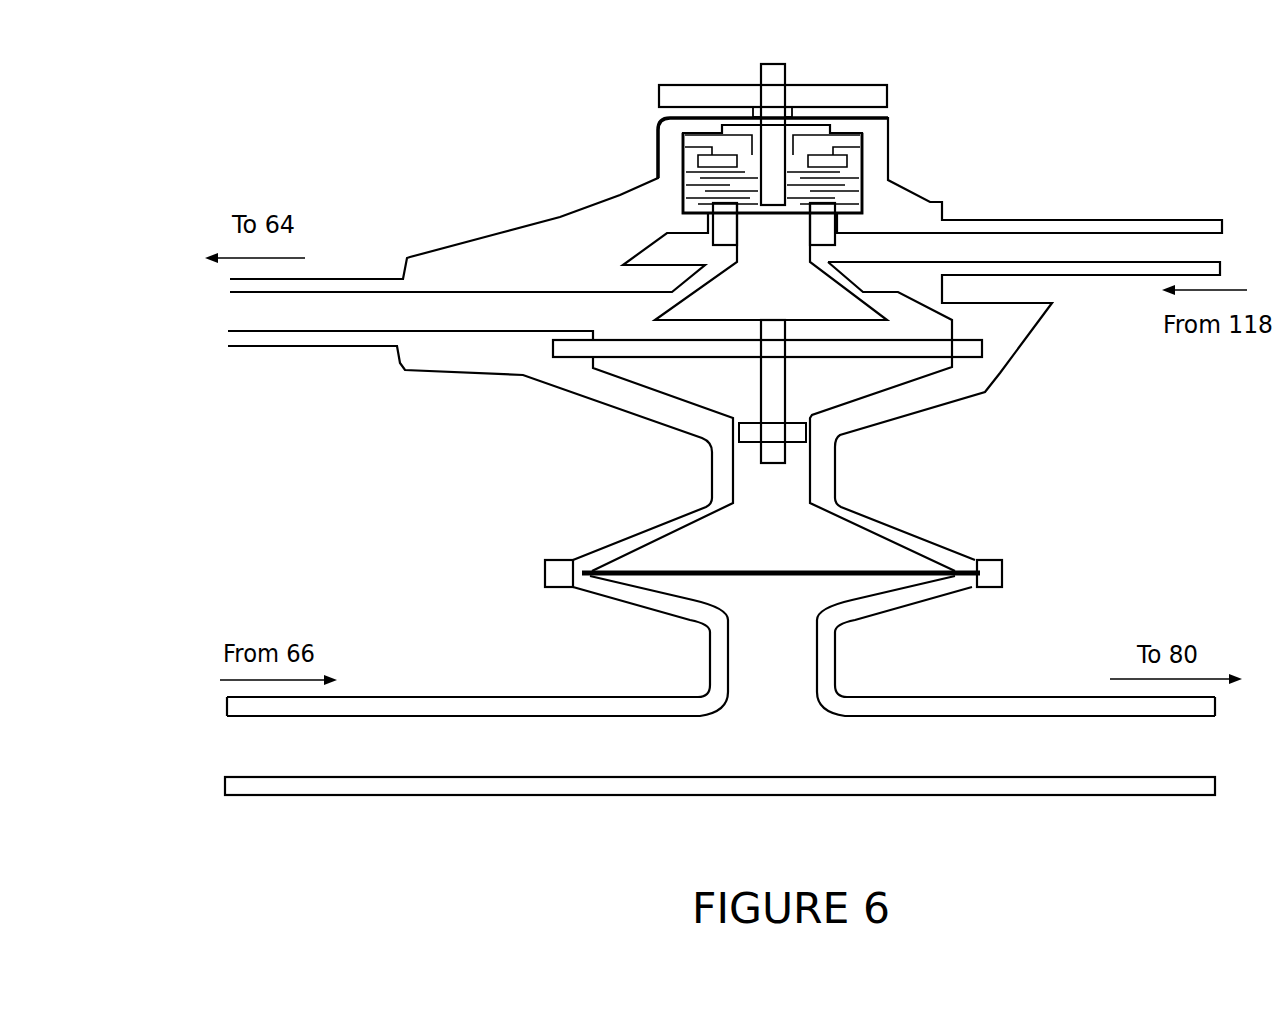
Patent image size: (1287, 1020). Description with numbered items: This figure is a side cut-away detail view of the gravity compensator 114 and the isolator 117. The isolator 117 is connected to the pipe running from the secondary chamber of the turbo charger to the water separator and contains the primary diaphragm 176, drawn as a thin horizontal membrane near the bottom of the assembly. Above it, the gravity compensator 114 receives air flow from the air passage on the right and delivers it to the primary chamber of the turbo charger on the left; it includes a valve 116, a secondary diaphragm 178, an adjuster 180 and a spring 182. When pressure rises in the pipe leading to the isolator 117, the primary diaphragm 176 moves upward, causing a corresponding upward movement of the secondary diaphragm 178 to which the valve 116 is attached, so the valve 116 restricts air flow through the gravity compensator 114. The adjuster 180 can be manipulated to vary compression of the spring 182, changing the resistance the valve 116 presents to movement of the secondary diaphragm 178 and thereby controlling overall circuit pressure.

The gravity compensator 114 is at (1046, 104).
The valve 116 is at (787, 304).
The isolator 117 is at (953, 523).
The primary diaphragm 176 is at (807, 568).
The secondary diaphragm 178 is at (600, 347).
The adjuster 180 is at (677, 98).
The spring 182 is at (720, 192).